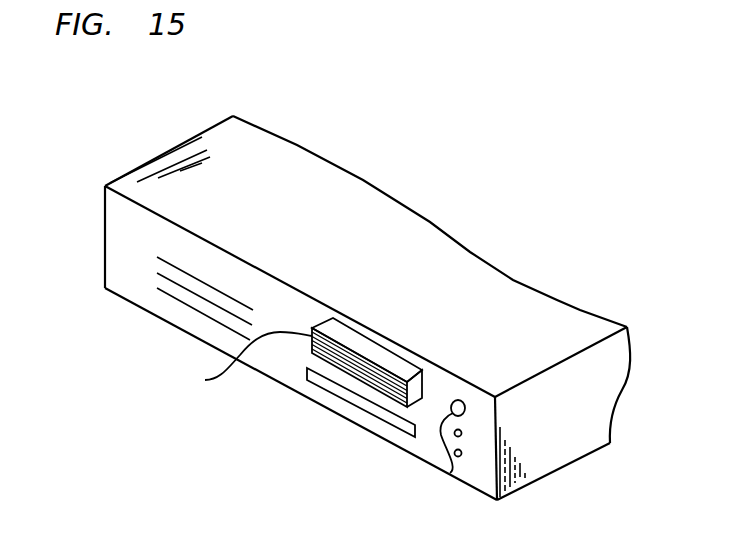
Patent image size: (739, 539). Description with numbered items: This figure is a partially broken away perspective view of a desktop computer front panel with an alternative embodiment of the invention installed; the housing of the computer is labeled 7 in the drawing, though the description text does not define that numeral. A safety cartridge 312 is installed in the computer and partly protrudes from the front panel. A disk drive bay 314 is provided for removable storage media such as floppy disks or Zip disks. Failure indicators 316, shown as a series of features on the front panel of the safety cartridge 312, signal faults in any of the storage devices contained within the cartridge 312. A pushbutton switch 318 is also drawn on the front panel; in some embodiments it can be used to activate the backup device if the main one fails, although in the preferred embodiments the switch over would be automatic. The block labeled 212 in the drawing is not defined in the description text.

The housing 7 is at (330, 254).
The connector block 212 is at (423, 393).
The safety cartridge 312 is at (205, 380).
The disk drive bay 314 is at (314, 383).
The failure indicators 316 is at (307, 443).
The pushbutton switch 318 is at (450, 473).